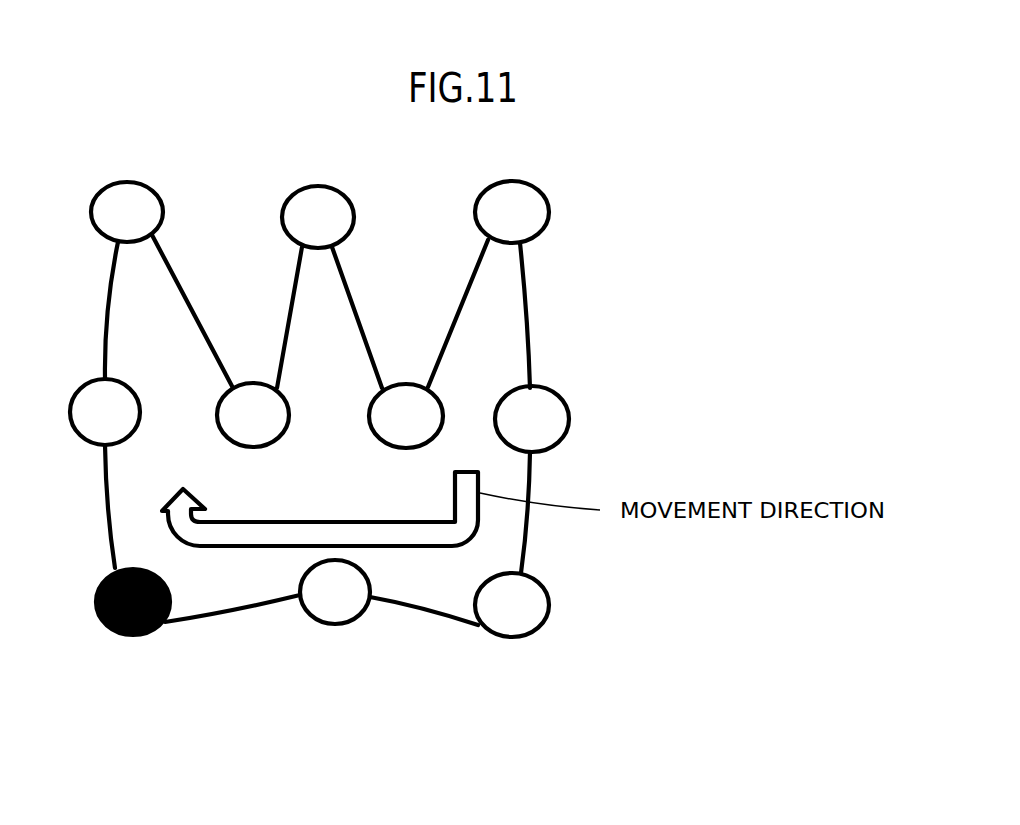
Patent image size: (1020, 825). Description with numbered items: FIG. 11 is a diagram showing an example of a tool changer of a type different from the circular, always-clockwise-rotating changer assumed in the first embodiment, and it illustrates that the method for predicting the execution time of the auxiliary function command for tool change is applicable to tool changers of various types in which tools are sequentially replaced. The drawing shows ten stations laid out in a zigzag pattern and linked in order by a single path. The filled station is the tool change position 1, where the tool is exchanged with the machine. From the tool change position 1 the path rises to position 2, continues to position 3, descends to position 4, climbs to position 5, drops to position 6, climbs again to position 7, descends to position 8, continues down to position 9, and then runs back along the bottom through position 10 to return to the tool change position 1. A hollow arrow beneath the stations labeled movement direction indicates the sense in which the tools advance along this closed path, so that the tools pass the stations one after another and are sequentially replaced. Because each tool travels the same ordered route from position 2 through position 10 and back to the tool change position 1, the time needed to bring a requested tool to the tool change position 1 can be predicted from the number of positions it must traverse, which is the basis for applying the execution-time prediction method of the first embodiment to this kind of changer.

The tool change position 1 is at (167, 663).
The machining position 2 is at (105, 412).
The machining position 3 is at (127, 212).
The machining position 4 is at (253, 415).
The machining position 5 is at (318, 217).
The machining position 6 is at (406, 416).
The machining position 7 is at (512, 212).
The machining position 8 is at (532, 419).
The machining position 9 is at (512, 605).
The machining position 10 is at (335, 592).